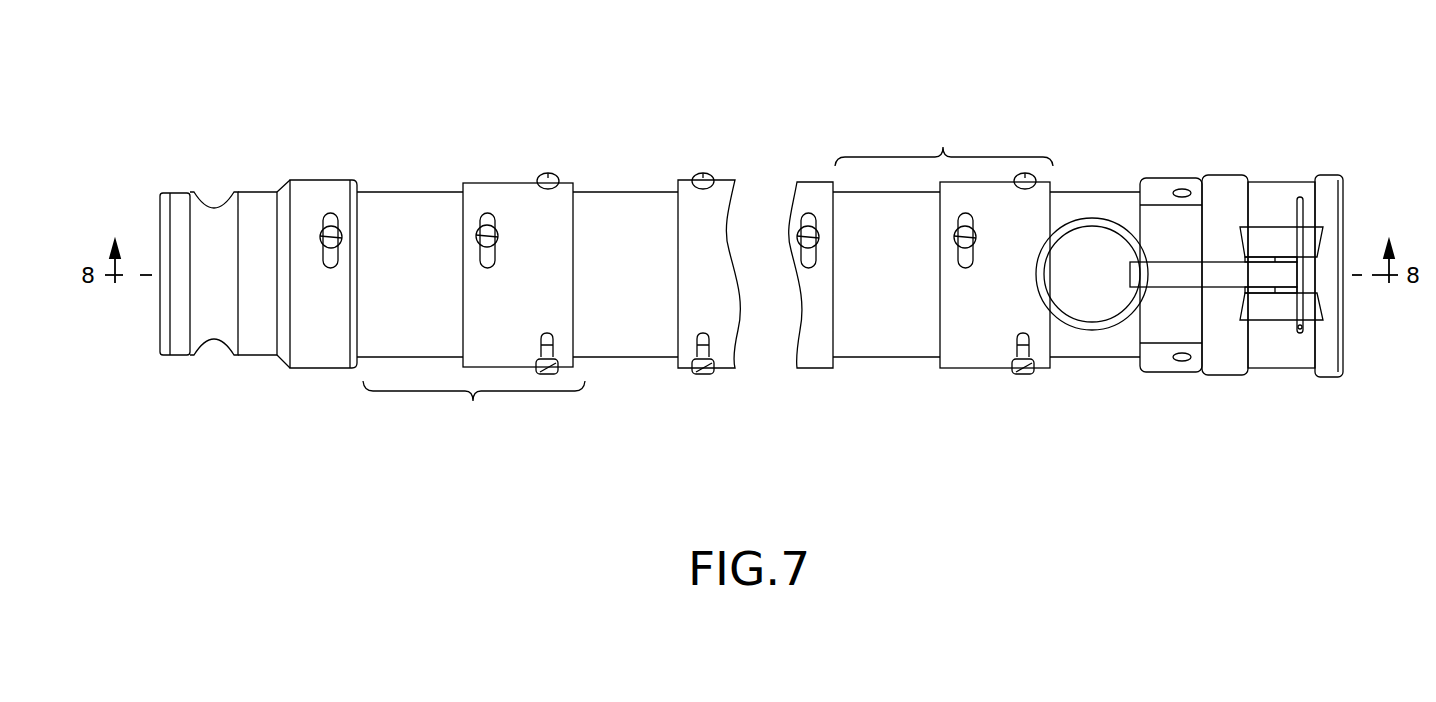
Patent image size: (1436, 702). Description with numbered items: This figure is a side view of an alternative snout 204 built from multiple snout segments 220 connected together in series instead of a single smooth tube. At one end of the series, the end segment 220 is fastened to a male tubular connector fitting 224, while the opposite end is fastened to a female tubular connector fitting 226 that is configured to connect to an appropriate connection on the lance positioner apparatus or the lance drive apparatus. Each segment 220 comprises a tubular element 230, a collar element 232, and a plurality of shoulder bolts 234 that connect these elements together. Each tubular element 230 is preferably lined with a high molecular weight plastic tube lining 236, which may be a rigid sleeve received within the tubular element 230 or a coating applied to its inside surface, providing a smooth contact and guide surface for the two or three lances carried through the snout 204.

The snout 204 is at (1204, 108).
The snout segment 220 is at (708, 274).
The male tubular connector fitting 224 is at (280, 155).
The female tubular connector fitting 226 is at (1278, 182).
The tubular element 230 is at (397, 192).
The collar element 232 is at (487, 183).
The shoulder bolt 234 is at (342, 238).
The tube lining 236 is at (493, 262).